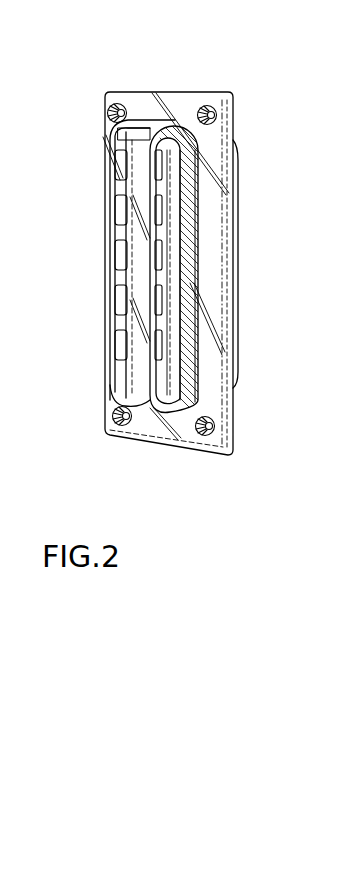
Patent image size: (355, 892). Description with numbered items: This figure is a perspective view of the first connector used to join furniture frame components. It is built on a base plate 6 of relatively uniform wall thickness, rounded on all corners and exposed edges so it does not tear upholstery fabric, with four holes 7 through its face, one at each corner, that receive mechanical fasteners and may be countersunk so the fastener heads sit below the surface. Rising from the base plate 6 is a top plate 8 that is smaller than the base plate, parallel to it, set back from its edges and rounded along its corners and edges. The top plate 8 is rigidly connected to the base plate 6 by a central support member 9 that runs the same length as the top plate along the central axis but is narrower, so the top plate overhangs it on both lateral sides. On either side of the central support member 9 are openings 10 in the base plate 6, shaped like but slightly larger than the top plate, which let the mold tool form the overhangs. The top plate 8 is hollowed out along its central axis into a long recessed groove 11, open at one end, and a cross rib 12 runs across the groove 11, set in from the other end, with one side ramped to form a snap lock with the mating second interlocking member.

The base plate 6 is at (128, 82).
The holes 7 is at (131, 440).
The top plate 8 is at (172, 167).
The central support member 9 is at (232, 215).
The openings 10 is at (200, 222).
The recessed groove 11 is at (140, 297).
The cross rib 12 is at (123, 173).